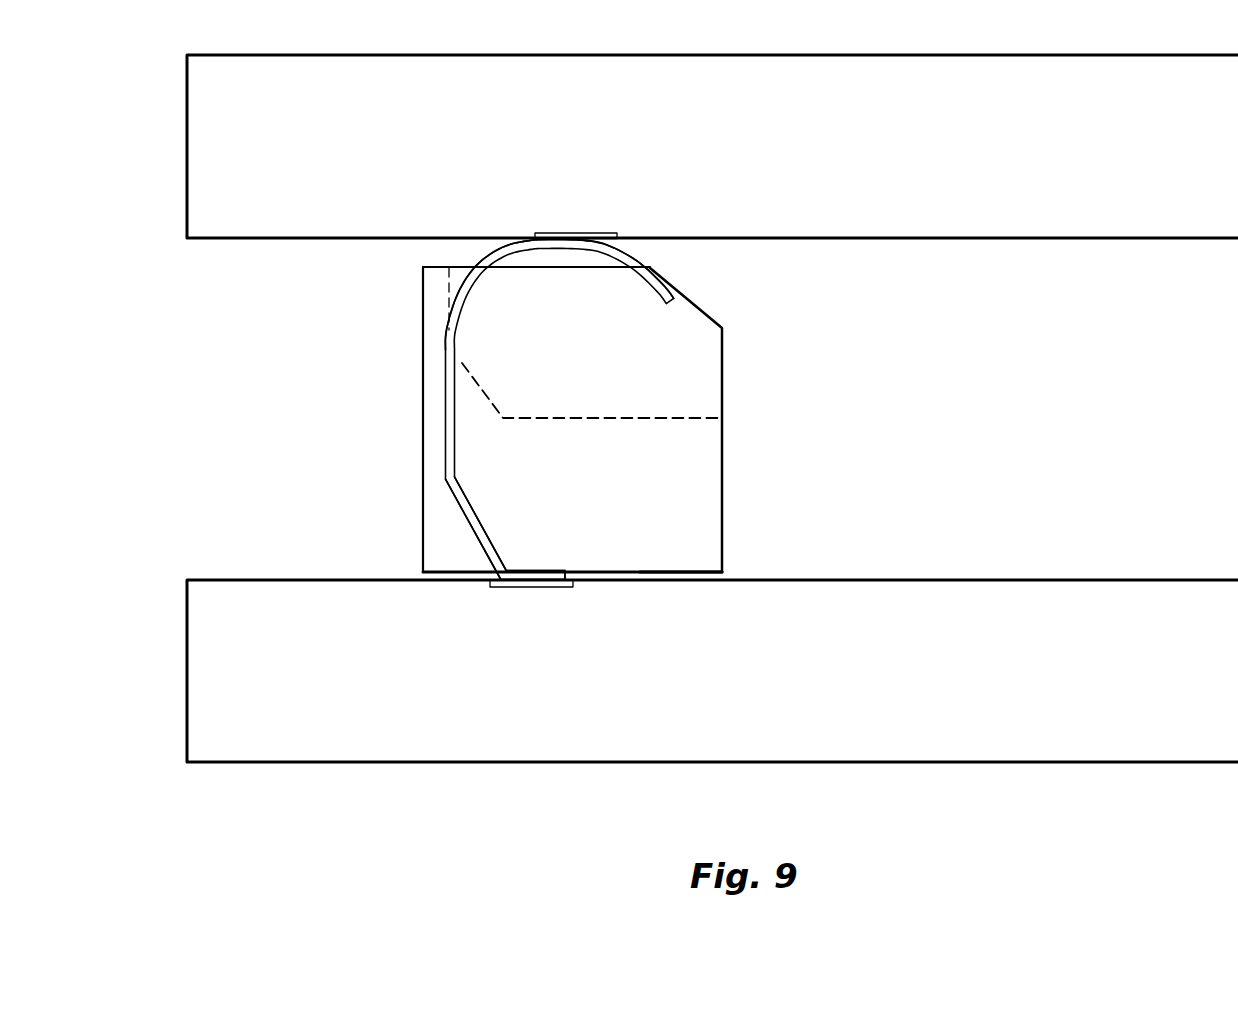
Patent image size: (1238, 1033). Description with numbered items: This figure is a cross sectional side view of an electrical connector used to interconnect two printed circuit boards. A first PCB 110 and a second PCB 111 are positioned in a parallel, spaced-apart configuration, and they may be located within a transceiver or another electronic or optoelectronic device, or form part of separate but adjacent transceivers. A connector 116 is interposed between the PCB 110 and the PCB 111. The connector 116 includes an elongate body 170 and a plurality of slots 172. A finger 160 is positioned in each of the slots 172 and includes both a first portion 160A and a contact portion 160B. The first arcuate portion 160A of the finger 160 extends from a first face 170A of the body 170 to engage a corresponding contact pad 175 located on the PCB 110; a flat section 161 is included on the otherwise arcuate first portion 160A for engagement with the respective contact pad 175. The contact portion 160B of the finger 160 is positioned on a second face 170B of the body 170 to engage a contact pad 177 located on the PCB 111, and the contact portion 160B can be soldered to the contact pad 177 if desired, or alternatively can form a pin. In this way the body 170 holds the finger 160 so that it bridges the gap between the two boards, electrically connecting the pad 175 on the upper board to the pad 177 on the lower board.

The first printed circuit board 110 is at (187, 147).
The second printed circuit board 111 is at (187, 668).
The connector 116 is at (745, 398).
The finger 160 is at (445, 438).
The first arcuate portion 160A is at (512, 255).
The contact portion 160B is at (535, 590).
The flat section 161 is at (548, 238).
The elongate body 170 is at (576, 409).
The first face 170A is at (428, 267).
The second face 170B is at (687, 575).
The slot 172 is at (647, 342).
The contact pad 175 is at (580, 233).
The contact pad 177 is at (535, 590).